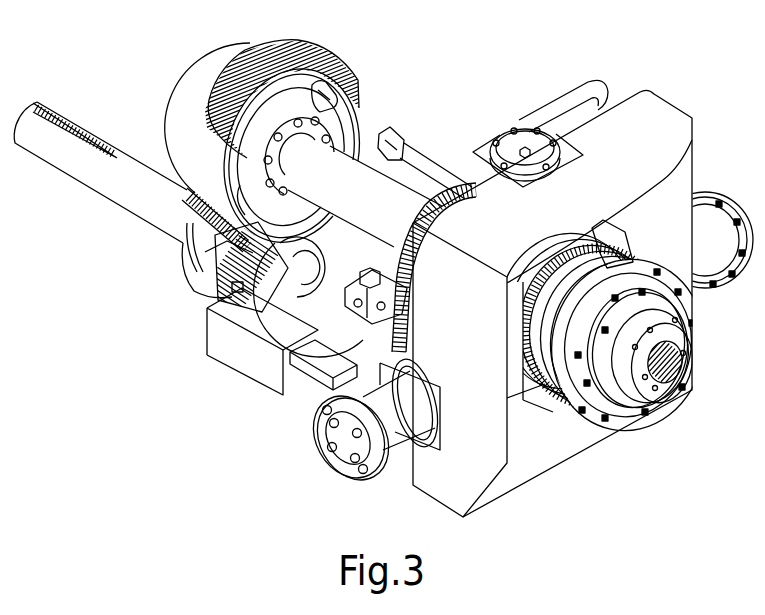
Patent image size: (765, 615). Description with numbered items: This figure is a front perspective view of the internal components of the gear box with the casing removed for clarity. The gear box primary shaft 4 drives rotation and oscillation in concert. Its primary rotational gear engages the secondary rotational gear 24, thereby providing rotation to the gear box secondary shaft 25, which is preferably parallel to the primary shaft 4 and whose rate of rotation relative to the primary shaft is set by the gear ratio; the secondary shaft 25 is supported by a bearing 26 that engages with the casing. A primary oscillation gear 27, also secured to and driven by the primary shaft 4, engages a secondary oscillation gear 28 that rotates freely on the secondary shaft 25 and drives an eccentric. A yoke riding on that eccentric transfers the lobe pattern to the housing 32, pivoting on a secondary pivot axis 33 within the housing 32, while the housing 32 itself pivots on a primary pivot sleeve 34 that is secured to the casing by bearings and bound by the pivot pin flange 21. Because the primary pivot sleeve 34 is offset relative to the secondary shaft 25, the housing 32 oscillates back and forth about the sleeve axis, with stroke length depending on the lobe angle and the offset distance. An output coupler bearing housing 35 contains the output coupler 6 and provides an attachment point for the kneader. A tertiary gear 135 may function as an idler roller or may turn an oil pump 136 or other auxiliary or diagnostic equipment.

The gear box primary shaft 4 is at (83, 178).
The bearing 26 is at (221, 50).
The secondary rotational gear 24 is at (340, 62).
The gear box secondary shaft 25 is at (386, 222).
The secondary oscillation gear 28 is at (459, 182).
The secondary pivot axis 33 is at (527, 144).
The housing 32 is at (657, 137).
The output coupler bearing housing 35 is at (553, 420).
The output coupler 6 is at (693, 357).
The pivot pin flange 21 is at (343, 457).
The primary pivot sleeve 34 is at (400, 423).
The tertiary gear 135 is at (211, 322).
The oil pump 136 is at (285, 378).
The primary oscillation gear 27 is at (323, 375).